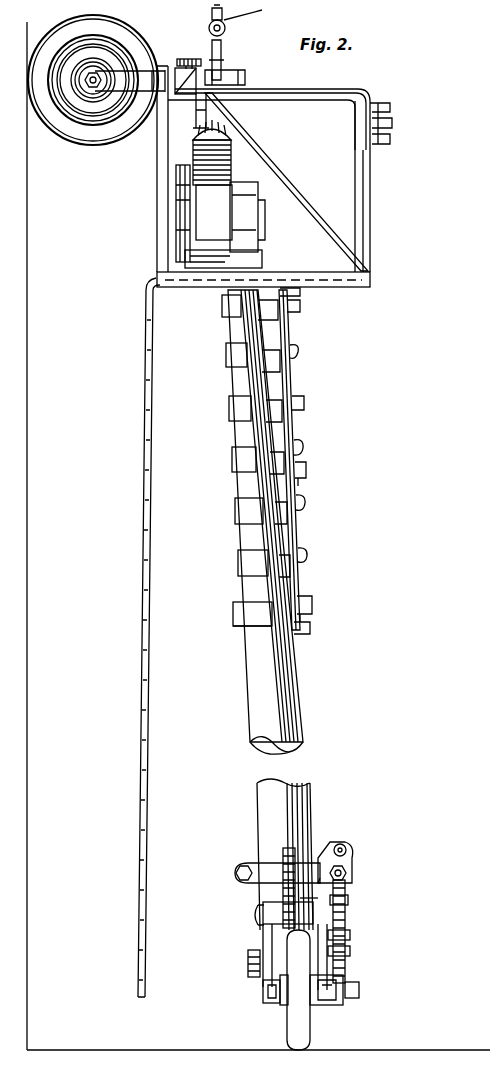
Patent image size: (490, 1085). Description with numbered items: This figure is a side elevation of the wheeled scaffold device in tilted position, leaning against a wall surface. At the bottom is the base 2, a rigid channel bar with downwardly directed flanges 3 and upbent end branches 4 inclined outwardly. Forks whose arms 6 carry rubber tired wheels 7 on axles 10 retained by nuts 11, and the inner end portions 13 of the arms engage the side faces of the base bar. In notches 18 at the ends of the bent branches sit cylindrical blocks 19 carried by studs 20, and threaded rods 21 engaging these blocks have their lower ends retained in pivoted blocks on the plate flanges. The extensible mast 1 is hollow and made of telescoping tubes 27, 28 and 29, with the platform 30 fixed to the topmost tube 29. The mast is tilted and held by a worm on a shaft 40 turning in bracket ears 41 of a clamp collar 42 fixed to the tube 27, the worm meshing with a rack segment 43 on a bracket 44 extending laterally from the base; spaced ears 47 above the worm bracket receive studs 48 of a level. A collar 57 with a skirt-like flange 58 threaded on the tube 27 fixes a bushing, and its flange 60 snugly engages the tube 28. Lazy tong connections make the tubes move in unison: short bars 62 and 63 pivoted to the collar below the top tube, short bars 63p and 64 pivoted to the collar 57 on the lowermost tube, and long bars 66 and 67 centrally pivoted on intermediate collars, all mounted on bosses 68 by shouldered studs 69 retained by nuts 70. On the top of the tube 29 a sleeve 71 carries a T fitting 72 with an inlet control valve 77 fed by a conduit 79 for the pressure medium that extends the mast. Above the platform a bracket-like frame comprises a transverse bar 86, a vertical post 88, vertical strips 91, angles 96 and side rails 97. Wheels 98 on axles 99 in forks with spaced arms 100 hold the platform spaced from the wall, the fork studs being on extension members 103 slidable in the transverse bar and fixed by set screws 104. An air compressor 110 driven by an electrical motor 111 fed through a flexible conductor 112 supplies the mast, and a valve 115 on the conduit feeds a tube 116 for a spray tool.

The extensible platform-supporting mast 1 is at (273, 609).
The base 2 is at (262, 920).
The downwardly directed flanges 3 is at (348, 921).
The upbent end branches 4 is at (350, 900).
The arms 6 is at (280, 1000).
The rubber tired wheels 7 is at (306, 1032).
The axles 10 is at (264, 992).
The nuts 11 is at (330, 998).
The inner end portions 13 is at (262, 984).
The notches 18 is at (258, 910).
The cylindrical blocks 19 is at (300, 893).
The studs 20 is at (320, 896).
The threaded rods 21 is at (348, 870).
The telescoping tube 27 is at (258, 710).
The telescoping tube 28 is at (226, 350).
The topmost tube 29 is at (222, 300).
The platform 30 is at (312, 282).
The shaft 40 is at (352, 875).
The bracket ears 41 is at (352, 880).
The clamp collar 42 is at (262, 869).
The rack segment 43 is at (350, 940).
The bracket 44 is at (360, 990).
The spaced ears 47 is at (350, 852).
The studs 48 is at (333, 850).
The collar 57 is at (242, 506).
The skirt-like flange 58 is at (238, 624).
The flange 60 is at (238, 612).
The short bar 62 is at (292, 312).
The short bar 63 is at (292, 325).
The short bar 63p is at (312, 608).
The short bar 64 is at (310, 630).
The long bar 66 is at (300, 446).
The long bar 67 is at (306, 485).
The bosses 68 is at (298, 406).
The shouldered studs 69 is at (296, 404).
The nuts 70 is at (305, 468).
The sleeve 71 is at (233, 122).
The T fitting 72 is at (246, 63).
The inlet control valve 77 is at (189, 52).
The conduit 79 is at (240, 136).
The transverse bar 86 is at (178, 68).
The vertical post 88 is at (185, 133).
The vertical strips 91 is at (160, 204).
The angles 96 is at (300, 178).
The side rails 97 is at (314, 97).
The wheels 98 is at (58, 122).
The axles 99 is at (82, 112).
The spaced arms 100 is at (123, 92).
The extension members 103 is at (222, 60).
The set screws 104 is at (212, 14).
The air compressor 110 is at (178, 172).
The electrical motor 111 is at (248, 236).
The flexible conductor 112 is at (144, 450).
The valve 115 is at (226, 29).
The tube 116 is at (262, 15).